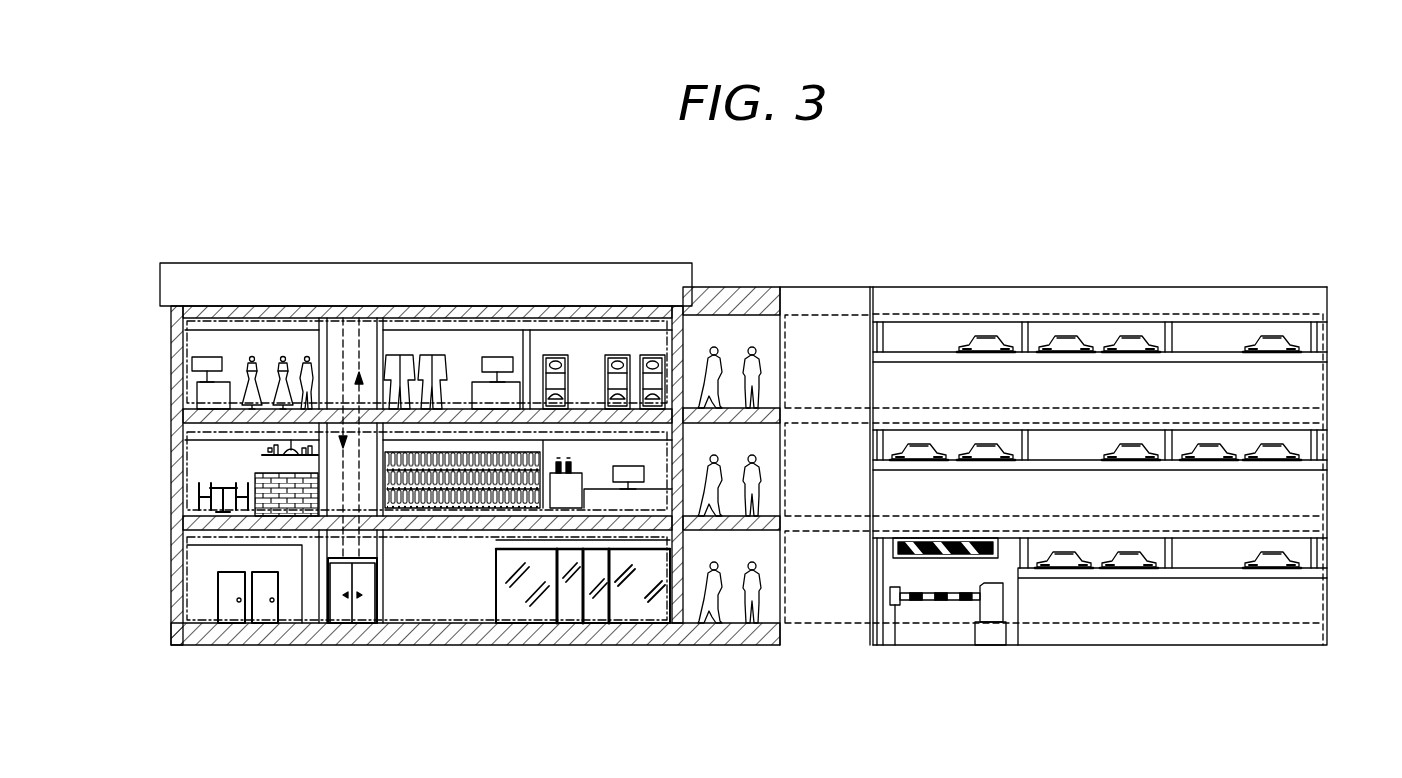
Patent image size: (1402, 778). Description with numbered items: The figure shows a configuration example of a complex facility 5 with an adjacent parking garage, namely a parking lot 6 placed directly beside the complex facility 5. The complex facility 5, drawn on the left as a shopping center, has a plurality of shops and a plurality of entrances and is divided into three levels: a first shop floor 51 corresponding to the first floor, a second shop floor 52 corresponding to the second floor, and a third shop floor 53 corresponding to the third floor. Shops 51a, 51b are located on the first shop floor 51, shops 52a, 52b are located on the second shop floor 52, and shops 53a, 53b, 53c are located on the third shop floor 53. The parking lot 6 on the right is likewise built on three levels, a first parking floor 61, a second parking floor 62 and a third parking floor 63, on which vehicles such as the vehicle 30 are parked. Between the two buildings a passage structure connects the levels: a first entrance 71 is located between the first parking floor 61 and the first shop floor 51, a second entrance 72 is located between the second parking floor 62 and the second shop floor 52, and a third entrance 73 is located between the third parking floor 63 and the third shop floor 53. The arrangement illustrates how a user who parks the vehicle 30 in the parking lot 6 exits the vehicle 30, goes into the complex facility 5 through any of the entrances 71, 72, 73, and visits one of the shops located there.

The complex facility 5 is at (372, 203).
The parking lot 6 is at (1138, 211).
The vehicle 30 is at (1270, 338).
The first shop floor 51 is at (173, 571).
The shop 51a is at (210, 602).
The shop 51b is at (567, 603).
The second shop floor 52 is at (173, 456).
The shop 52a is at (202, 472).
The shop 52b is at (597, 480).
The third shop floor 53 is at (173, 343).
The shop 53a is at (250, 343).
The shop 53b is at (457, 343).
The shop 53c is at (620, 343).
The first parking floor 61 is at (1328, 596).
The second parking floor 62 is at (1328, 481).
The third parking floor 63 is at (1328, 375).
The first entrance 71 is at (697, 612).
The second entrance 72 is at (737, 448).
The third entrance 73 is at (732, 325).